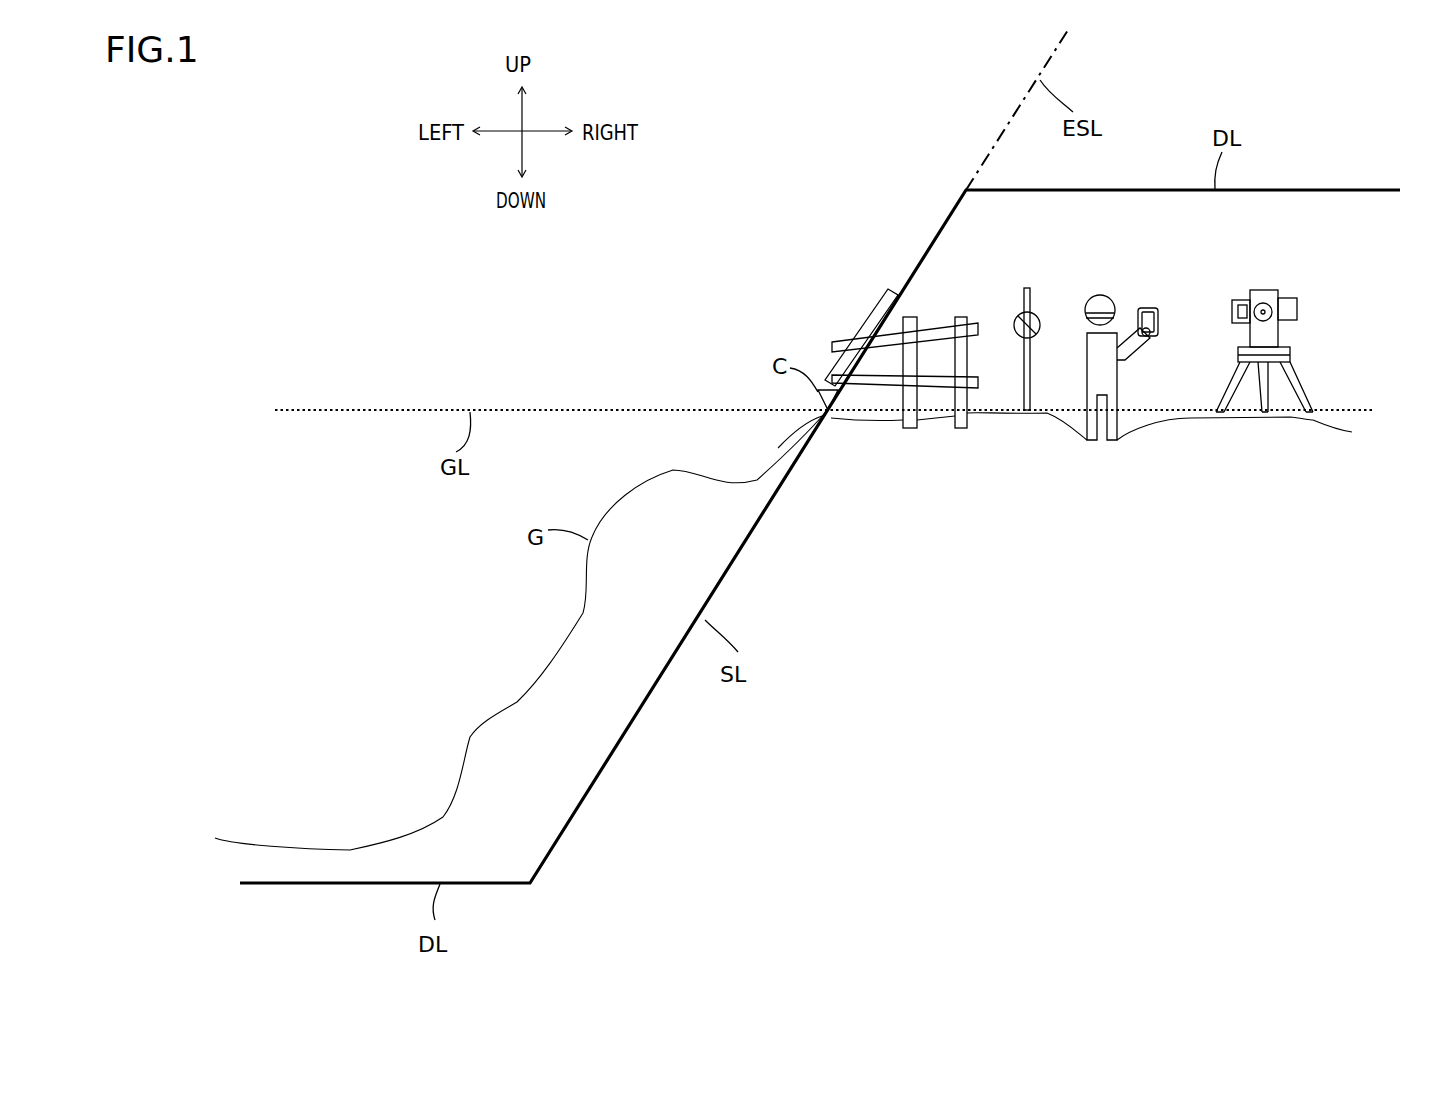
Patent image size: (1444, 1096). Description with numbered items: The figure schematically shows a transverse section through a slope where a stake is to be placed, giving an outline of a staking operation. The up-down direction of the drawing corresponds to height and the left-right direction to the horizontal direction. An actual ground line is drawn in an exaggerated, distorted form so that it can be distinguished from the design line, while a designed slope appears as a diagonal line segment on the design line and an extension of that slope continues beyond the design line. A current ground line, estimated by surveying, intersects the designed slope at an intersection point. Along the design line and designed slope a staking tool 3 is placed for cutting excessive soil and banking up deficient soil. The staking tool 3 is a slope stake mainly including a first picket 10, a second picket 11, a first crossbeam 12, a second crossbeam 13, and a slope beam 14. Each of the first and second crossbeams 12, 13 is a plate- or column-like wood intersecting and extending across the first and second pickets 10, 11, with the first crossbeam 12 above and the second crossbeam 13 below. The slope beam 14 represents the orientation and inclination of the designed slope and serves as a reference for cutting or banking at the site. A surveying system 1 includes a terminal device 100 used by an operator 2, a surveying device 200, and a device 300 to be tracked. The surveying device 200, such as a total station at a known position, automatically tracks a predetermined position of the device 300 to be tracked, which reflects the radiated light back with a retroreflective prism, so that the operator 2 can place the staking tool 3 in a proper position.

The surveying system 1 is at (1355, 305).
The operator 2 is at (1104, 265).
The staking tool 3 is at (812, 313).
The first picket 10 is at (918, 360).
The second picket 11 is at (972, 356).
The first crossbeam 12 is at (974, 329).
The second crossbeam 13 is at (978, 386).
The slope beam 14 is at (878, 306).
The terminal device 100 is at (1152, 306).
The surveying device 200 is at (1265, 290).
The device to be tracked 300 is at (1027, 288).